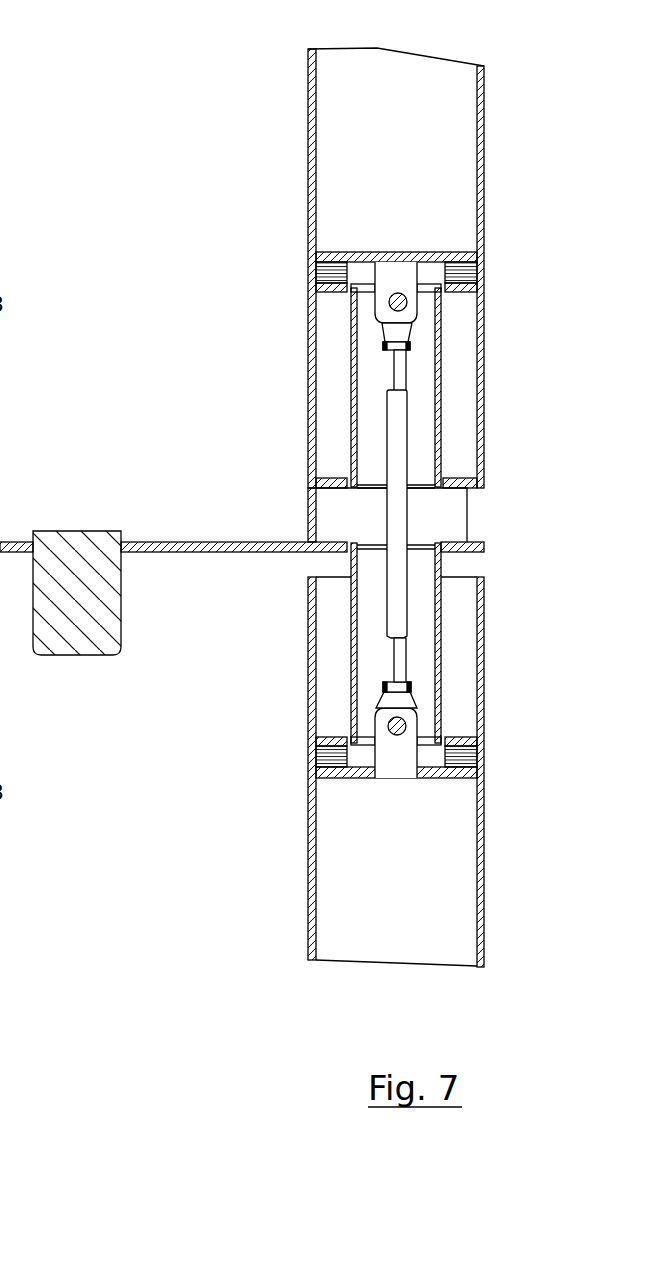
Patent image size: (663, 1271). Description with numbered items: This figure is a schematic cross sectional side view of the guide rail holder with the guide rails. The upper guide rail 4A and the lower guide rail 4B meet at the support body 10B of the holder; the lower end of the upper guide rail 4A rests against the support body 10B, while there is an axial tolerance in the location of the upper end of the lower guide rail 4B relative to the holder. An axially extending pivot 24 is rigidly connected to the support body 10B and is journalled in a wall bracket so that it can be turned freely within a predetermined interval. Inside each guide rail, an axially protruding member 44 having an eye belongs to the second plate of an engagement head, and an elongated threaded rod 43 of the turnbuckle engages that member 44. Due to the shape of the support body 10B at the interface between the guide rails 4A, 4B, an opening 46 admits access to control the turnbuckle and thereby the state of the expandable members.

The upper guide rail 4A is at (310, 104).
The lower guide rail 4B is at (312, 893).
The support body 10B is at (191, 553).
The pivot 24 is at (78, 627).
The threaded rod 43 is at (397, 365).
The axially protruding member having an eye 44 is at (382, 310).
The opening 46 is at (441, 510).